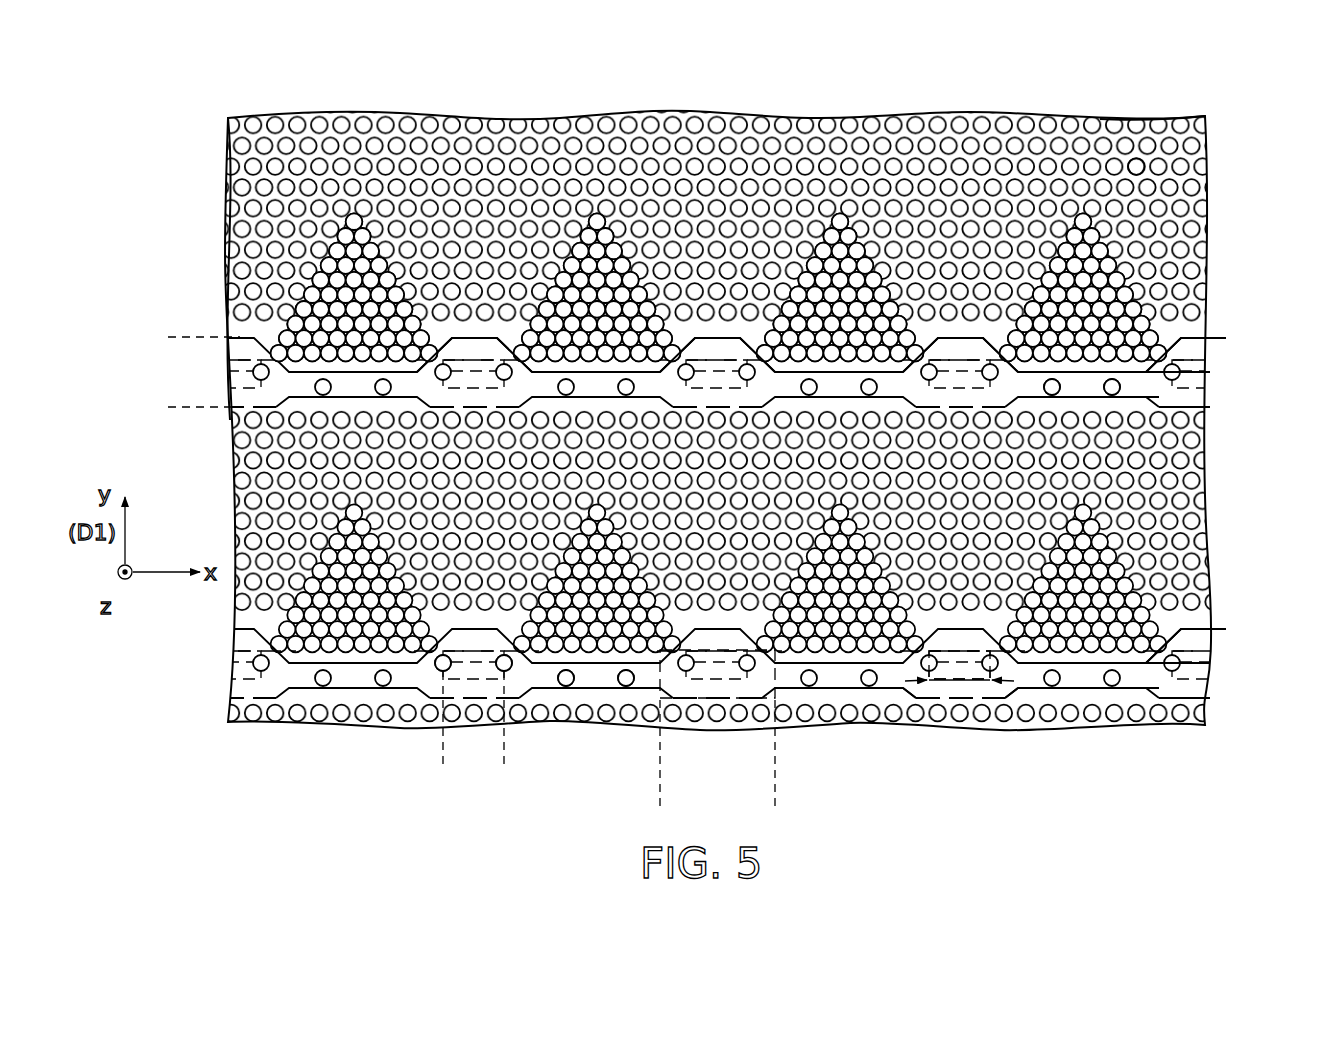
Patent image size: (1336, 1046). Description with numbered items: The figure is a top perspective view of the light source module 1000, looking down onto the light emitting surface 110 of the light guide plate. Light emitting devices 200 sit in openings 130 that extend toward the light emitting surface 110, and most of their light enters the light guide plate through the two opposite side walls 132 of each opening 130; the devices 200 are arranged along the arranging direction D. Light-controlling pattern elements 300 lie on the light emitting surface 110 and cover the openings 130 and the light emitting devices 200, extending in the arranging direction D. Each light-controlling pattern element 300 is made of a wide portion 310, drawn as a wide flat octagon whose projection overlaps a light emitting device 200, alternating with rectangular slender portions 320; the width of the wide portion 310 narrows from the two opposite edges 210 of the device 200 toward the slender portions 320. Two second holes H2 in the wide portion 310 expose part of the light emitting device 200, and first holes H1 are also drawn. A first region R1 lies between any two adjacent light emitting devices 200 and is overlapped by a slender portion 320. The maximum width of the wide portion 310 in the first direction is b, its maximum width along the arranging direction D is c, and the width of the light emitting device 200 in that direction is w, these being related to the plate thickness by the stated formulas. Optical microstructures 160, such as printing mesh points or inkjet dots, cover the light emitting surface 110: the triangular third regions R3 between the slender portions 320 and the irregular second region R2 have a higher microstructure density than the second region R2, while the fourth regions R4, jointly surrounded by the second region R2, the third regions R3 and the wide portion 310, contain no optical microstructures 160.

The light source module 1000 is at (1264, 800).
The light emitting surface 110 is at (228, 185).
The opening 130 is at (1270, 404).
The side walls 132 is at (1204, 372).
The optical microstructures 160 is at (1187, 120).
The light emitting device 200 is at (971, 682).
The edges 210 is at (903, 702).
The light-controlling pattern element 300 is at (1190, 353).
The wide portion 310 is at (713, 700).
The slender portion 320 is at (836, 692).
The first region R1 is at (1086, 386).
The second region R2 is at (1146, 170).
The third regions R3 is at (360, 258).
The fourth regions R4 is at (472, 326).
The first holes H1 is at (566, 689).
The second holes H2 is at (441, 673).
The maximum width of the wide portion in the first direction b is at (178, 340).
The maximum width of the wide portion in the arranging direction c is at (772, 806).
The width of the light emitting device w is at (501, 760).
The arranging direction D is at (222, 683).